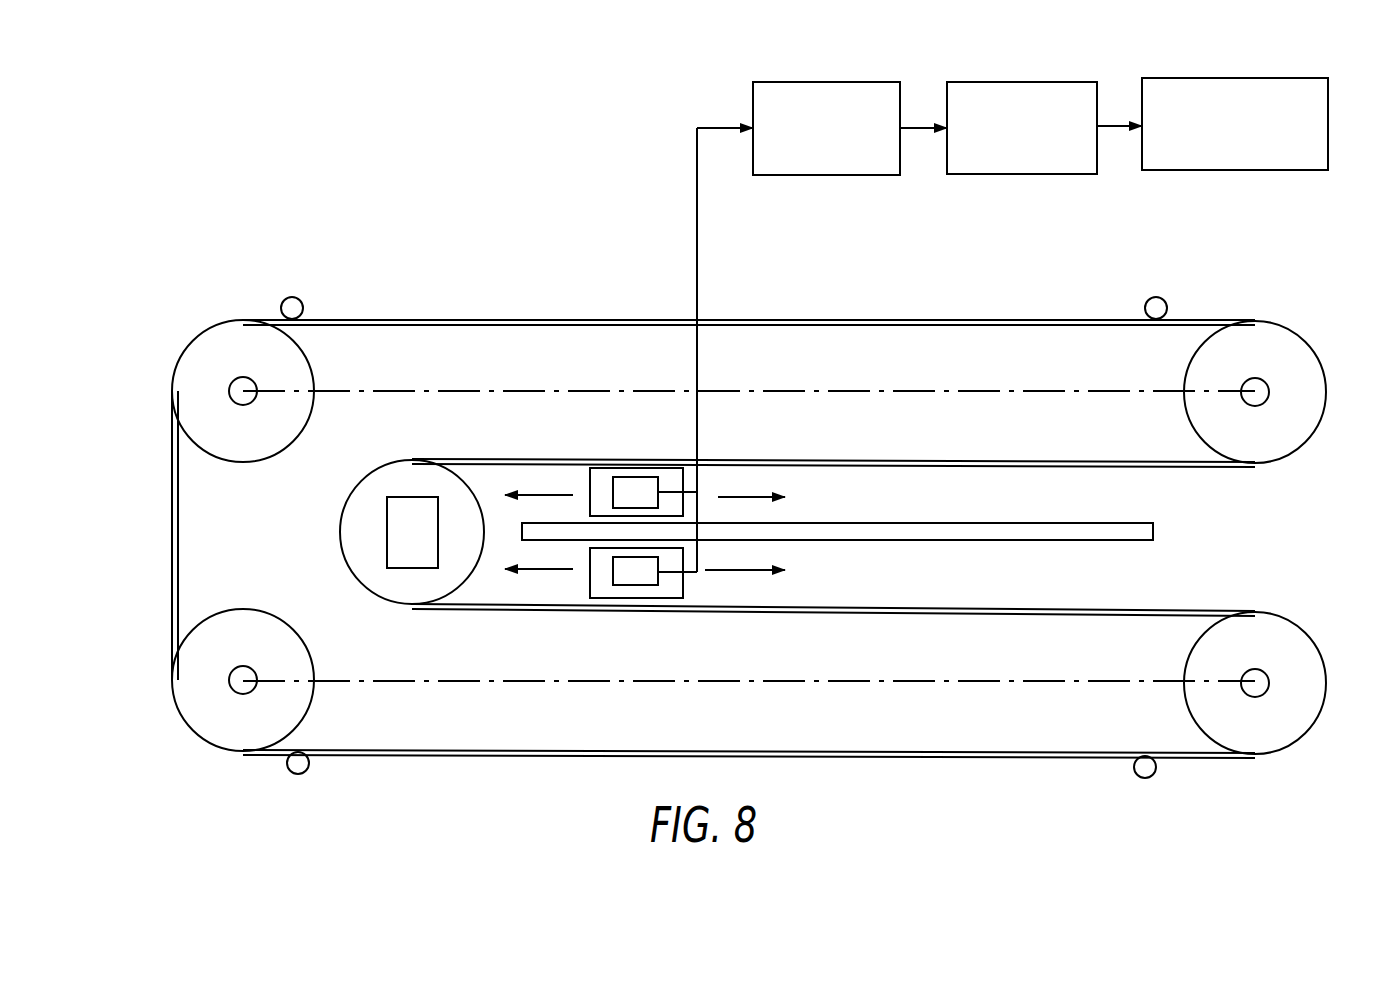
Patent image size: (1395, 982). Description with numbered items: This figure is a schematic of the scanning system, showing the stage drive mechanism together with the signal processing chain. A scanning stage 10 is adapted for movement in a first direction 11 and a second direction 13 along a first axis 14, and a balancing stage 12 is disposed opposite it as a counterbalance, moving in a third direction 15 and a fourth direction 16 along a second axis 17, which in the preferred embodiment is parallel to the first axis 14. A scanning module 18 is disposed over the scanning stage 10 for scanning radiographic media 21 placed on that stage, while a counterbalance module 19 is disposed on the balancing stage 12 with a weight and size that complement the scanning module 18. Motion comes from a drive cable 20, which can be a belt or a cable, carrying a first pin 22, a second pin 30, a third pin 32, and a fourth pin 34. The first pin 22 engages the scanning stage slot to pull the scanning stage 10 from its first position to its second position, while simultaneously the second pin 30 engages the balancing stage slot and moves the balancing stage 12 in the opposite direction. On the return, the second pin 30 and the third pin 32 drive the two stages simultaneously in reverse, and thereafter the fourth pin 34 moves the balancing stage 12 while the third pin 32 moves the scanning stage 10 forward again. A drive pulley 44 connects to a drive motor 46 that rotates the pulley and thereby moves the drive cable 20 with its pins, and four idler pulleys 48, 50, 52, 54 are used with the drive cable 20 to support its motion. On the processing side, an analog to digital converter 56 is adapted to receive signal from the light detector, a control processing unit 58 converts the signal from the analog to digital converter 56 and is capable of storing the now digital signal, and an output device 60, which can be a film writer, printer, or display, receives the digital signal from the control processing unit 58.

The scanning stage 10 is at (590, 485).
The first direction 11 is at (742, 495).
The balancing stage 12 is at (590, 582).
The second direction 13 is at (528, 492).
The first axis 14 is at (897, 393).
The third direction 15 is at (750, 572).
The fourth direction 16 is at (543, 571).
The second axis 17 is at (866, 683).
The scanning module 18 is at (637, 477).
The counterbalance module 19 is at (630, 588).
The drive cable 20 is at (424, 320).
The radiographic media 21 is at (1004, 542).
The first pin 22 is at (1148, 300).
The second pin 30 is at (300, 300).
The third pin 32 is at (300, 775).
The fourth pin 34 is at (1135, 777).
The drive pulley 44 is at (366, 487).
The drive motor 46 is at (387, 533).
The idler pulley 48 is at (1300, 357).
The idler pulley 50 is at (191, 357).
The idler pulley 52 is at (192, 711).
The idler pulley 54 is at (1304, 712).
The analog to digital converter 56 is at (848, 82).
The control processing unit 58 is at (1025, 82).
The output device 60 is at (1216, 78).